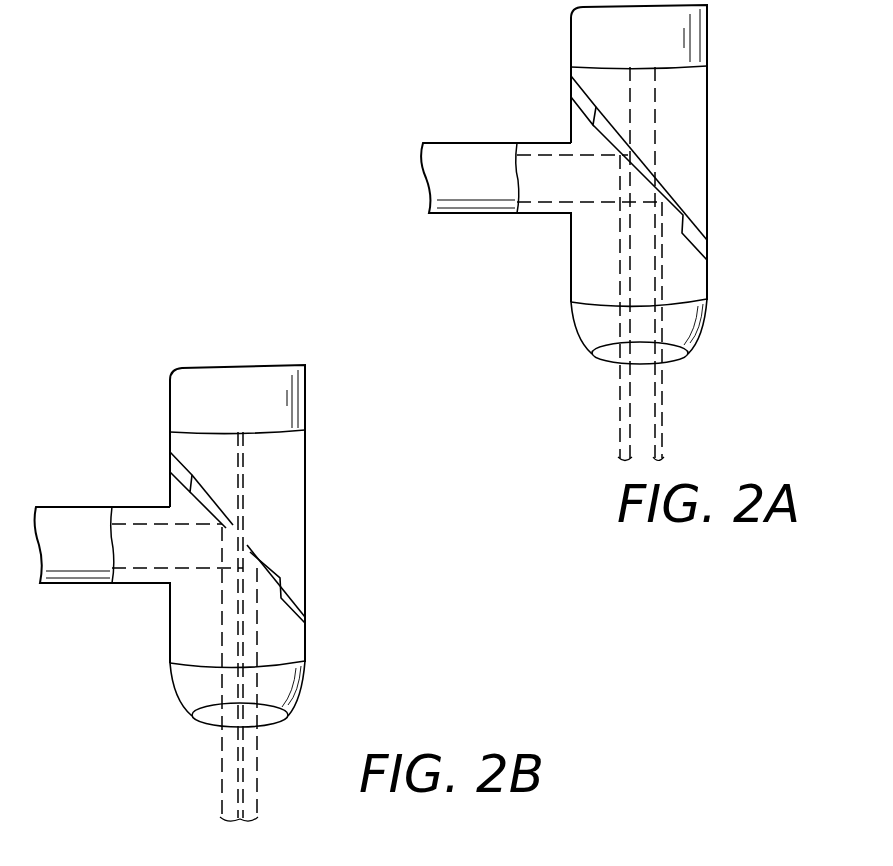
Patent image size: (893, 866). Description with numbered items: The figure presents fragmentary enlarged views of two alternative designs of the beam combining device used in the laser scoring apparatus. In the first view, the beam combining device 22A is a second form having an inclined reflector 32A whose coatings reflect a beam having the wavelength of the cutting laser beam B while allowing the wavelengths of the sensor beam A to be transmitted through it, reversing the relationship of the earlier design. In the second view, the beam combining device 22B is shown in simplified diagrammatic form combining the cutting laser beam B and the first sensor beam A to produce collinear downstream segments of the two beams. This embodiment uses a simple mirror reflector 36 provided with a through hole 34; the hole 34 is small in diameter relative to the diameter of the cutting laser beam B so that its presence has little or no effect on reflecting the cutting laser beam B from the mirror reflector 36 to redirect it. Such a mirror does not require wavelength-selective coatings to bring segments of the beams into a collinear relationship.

In FIG. 2A, the beam combining device 22A is at (593, 233).
In FIG. 2B, the beam combining device 22B is at (241, 593).
In FIG. 2A, the inclined reflector 32A is at (603, 137).
In FIG. 2B, the through hole 34 is at (240, 537).
In FIG. 2B, the mirror reflector 36 is at (200, 503).
In FIG. 2A, the sensor beam A is at (655, 100).
In FIG. 2B, the sensor beam A is at (243, 473).
In FIG. 2A, the cutting laser beam B is at (535, 155).
In FIG. 2B, the cutting laser beam B is at (153, 523).